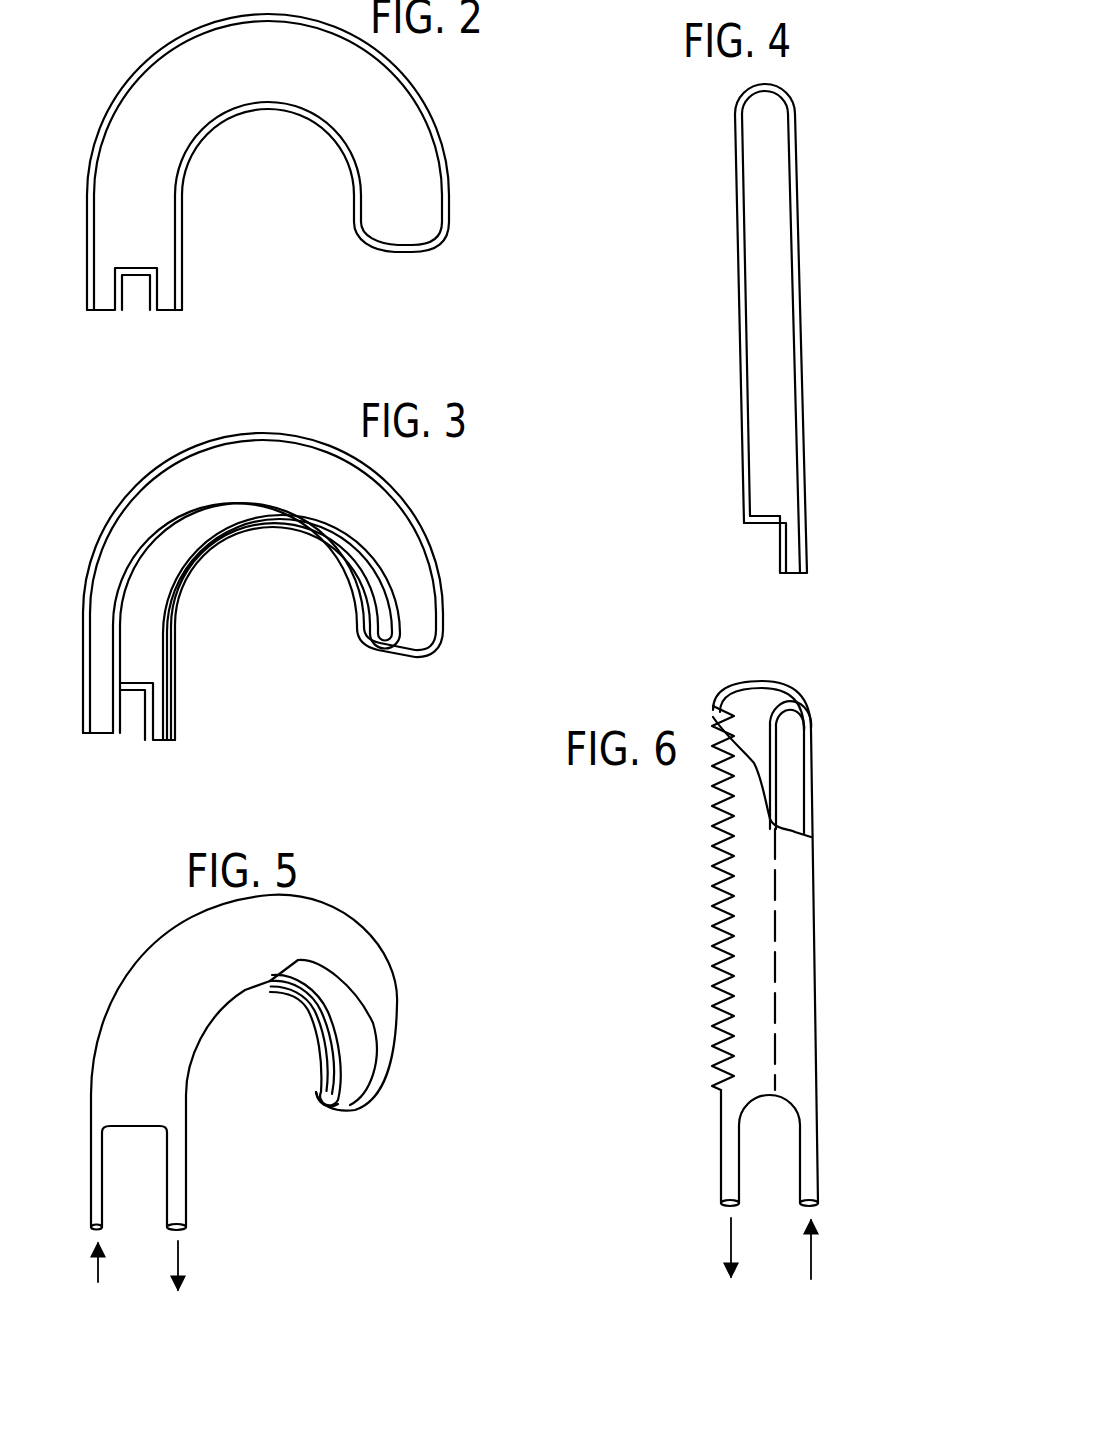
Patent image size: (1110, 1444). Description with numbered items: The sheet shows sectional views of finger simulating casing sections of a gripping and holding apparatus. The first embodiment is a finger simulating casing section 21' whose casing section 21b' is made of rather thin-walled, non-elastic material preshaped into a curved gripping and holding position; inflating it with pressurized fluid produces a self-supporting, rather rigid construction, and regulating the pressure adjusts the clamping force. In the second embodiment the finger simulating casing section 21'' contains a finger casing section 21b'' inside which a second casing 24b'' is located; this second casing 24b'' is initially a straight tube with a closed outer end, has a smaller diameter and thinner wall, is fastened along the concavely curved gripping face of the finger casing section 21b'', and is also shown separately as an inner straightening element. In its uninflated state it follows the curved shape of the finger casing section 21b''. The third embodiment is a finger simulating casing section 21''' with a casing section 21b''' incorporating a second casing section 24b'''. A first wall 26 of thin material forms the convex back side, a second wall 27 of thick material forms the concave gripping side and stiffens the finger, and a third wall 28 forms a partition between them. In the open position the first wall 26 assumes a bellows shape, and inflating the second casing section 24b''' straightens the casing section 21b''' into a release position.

In FIG. 2, the finger simulating casing section 21' is at (305, 162).
In FIG. 2, the finger simulating casing section 21b' is at (214, 180).
In FIG. 3, the finger simulating casing section 21'' is at (301, 583).
In FIG. 3, the finger casing section 21b'' is at (215, 599).
In FIG. 3, the second casing 24b'' is at (273, 627).
In FIG. 4, the second casing 24b'' is at (728, 328).
In FIG. 5, the finger simulating casing section 21''' is at (266, 1081).
In FIG. 6, the finger simulating casing section 21''' is at (817, 1004).
In FIG. 5, the finger casing section 21b''' is at (165, 979).
In FIG. 6, the finger casing section 21b''' is at (802, 903).
In FIG. 5, the second casing section 24b''' is at (378, 1040).
In FIG. 6, the second casing section 24b''' is at (839, 786).
In FIG. 5, the first wall 26 is at (337, 1114).
In FIG. 6, the first wall 26 is at (727, 694).
In FIG. 5, the second wall 27 is at (317, 1030).
In FIG. 6, the second wall 27 is at (806, 735).
In FIG. 5, the third wall 28 is at (317, 990).
In FIG. 6, the third wall 28 is at (766, 683).